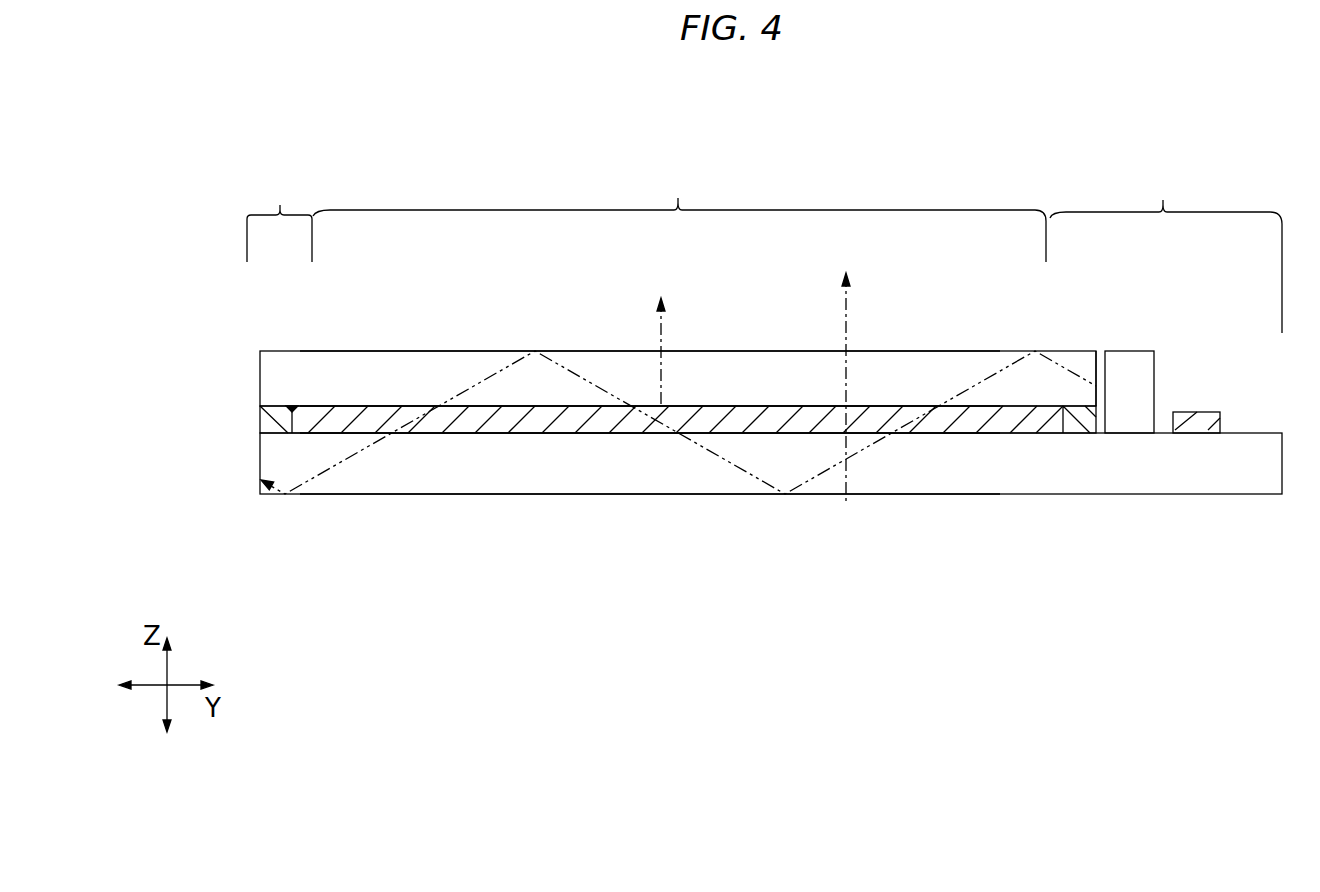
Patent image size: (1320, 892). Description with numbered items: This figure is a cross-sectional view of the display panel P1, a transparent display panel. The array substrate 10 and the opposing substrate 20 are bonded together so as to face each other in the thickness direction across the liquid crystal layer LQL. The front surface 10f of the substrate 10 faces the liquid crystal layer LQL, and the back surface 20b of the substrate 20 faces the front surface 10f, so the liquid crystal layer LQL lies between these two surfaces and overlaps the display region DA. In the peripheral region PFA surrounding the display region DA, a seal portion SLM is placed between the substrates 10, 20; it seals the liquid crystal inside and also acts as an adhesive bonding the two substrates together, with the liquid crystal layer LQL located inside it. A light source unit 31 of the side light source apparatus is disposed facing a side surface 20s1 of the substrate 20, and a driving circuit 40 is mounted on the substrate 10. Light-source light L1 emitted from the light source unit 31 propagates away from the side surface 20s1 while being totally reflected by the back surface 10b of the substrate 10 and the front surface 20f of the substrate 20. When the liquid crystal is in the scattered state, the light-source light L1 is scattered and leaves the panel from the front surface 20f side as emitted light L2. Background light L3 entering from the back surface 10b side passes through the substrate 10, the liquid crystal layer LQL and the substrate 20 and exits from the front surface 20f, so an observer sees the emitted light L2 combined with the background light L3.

The substrate (opposing substrate) 20 is at (283, 371).
The substrate (array substrate) 10 is at (290, 466).
The liquid crystal layer LQL is at (463, 423).
The seal portion (seal member) SLM is at (268, 420).
The light source unit 31 is at (1125, 410).
The driving circuit 40 is at (1197, 425).
The light-source light L1 is at (966, 395).
The emitted light L2 is at (661, 365).
The background light L3 is at (846, 342).
The front surface of substrate 20 20f is at (556, 345).
The back surface of substrate 20 20b is at (803, 416).
The side surface of substrate 20 20s1 is at (1108, 368).
The back surface of substrate 10 10b is at (562, 500).
The front surface of substrate 10 10f is at (599, 430).
The display panel P1 is at (484, 176).
The peripheral region (frame region) PFA is at (764, 250).
The display region DA is at (679, 215).